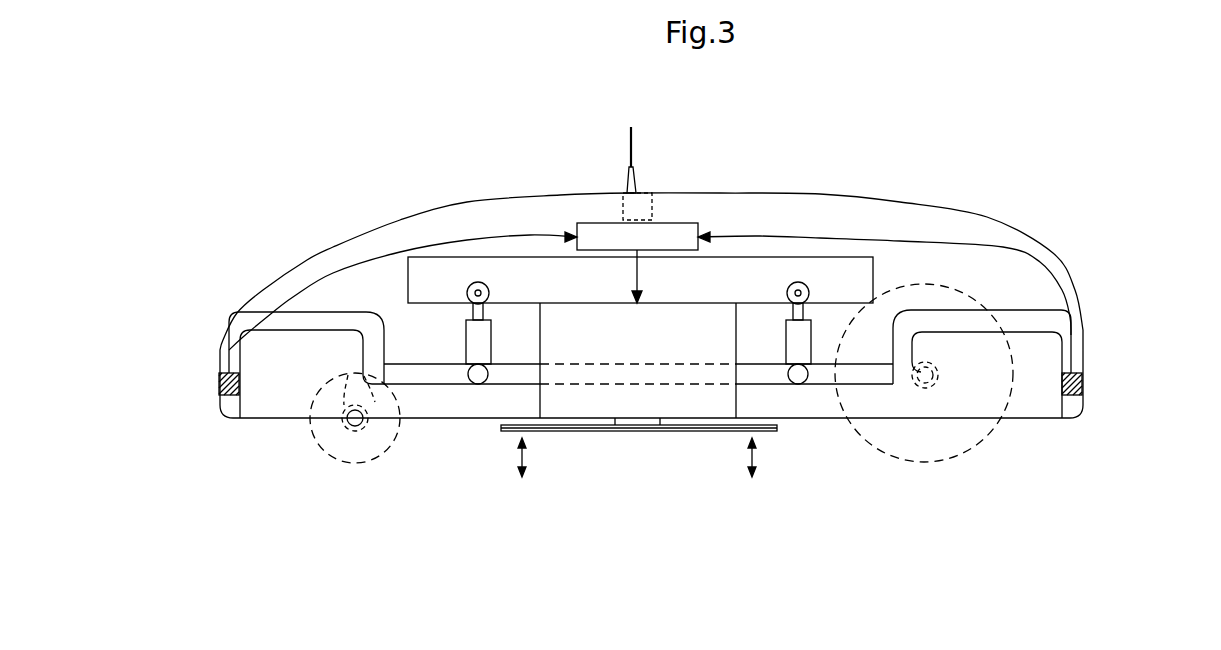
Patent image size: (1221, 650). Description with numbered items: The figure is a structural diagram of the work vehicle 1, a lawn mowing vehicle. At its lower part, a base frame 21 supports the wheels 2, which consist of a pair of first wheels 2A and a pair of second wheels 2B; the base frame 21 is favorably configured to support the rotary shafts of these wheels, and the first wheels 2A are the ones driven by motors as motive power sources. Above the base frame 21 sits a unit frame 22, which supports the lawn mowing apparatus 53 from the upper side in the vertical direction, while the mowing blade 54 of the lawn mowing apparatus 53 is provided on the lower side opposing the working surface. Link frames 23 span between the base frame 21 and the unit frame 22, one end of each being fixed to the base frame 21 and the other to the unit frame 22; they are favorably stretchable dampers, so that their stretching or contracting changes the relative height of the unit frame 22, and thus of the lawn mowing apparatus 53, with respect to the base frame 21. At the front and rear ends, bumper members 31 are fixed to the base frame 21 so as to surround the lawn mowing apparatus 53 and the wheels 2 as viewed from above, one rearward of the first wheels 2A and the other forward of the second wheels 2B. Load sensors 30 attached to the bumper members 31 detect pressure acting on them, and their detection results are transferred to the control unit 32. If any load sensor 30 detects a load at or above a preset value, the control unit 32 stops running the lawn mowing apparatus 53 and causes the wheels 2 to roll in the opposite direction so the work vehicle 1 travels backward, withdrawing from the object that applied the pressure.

The work vehicle 1 is at (755, 187).
The wheels 2 is at (661, 414).
The first wheels 2A is at (937, 462).
The second wheels 2B is at (375, 458).
The base frame 21 is at (447, 387).
The unit frame 22 is at (862, 270).
The link frames 23 is at (478, 342).
The load sensors 30 is at (652, 383).
The bumper members 31 is at (219, 380).
The control unit 32 is at (668, 222).
The lawn mowing apparatus 53 is at (738, 398).
The mowing blade 54 is at (703, 431).